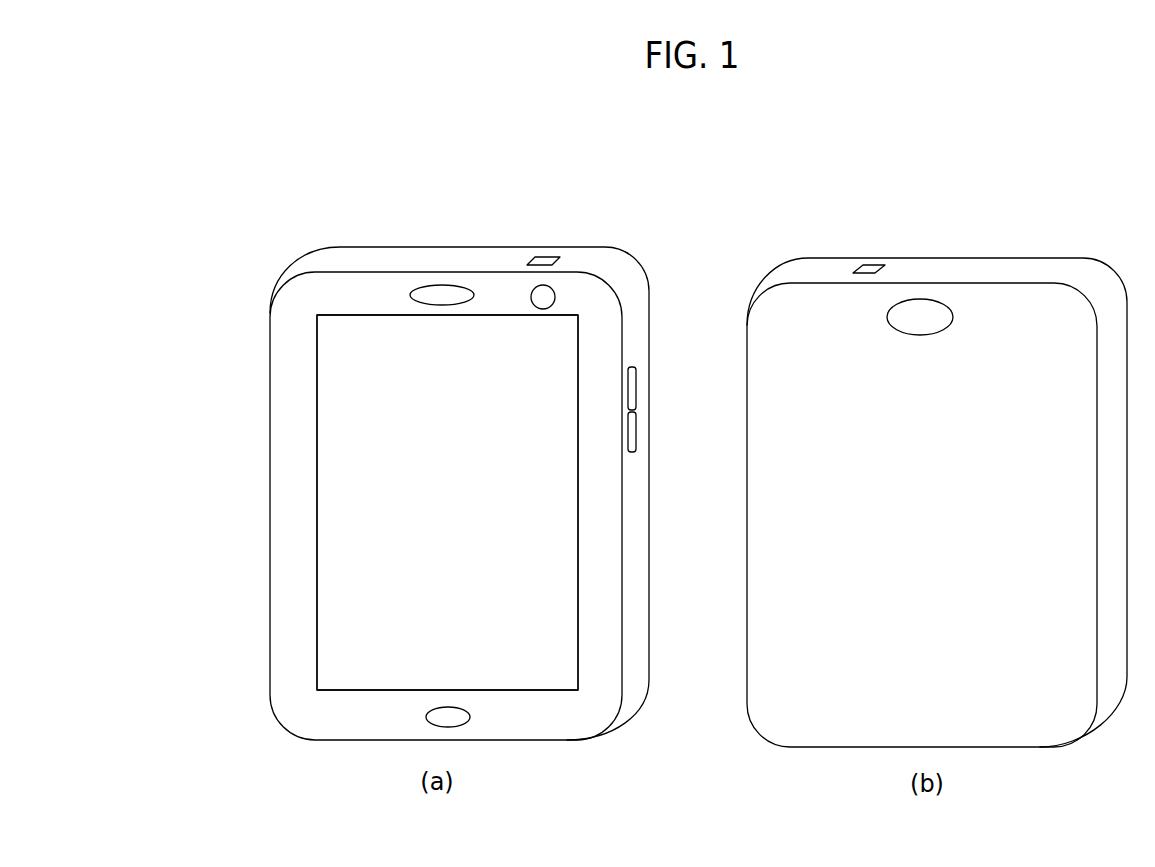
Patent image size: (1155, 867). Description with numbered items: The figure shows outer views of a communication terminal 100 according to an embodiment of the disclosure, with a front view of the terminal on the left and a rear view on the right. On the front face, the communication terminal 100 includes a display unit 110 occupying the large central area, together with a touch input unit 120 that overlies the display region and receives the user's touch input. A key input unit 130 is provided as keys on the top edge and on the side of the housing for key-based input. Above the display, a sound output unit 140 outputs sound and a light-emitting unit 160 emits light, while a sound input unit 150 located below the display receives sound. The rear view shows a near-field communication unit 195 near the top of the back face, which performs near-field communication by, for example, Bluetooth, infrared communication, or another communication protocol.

The communication terminal 100 is at (470, 239).
The display unit 110 is at (340, 432).
The touch input unit 120 is at (340, 520).
The key input unit 130 is at (553, 256).
The sound output unit 140 is at (410, 293).
The sound input unit 150 is at (470, 713).
The light-emitting unit 160 is at (556, 298).
The near-field communication unit 195 is at (895, 300).